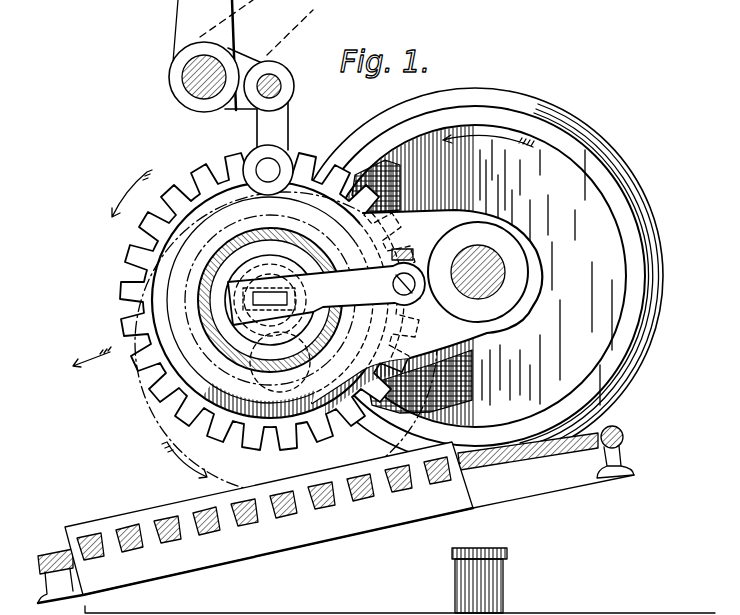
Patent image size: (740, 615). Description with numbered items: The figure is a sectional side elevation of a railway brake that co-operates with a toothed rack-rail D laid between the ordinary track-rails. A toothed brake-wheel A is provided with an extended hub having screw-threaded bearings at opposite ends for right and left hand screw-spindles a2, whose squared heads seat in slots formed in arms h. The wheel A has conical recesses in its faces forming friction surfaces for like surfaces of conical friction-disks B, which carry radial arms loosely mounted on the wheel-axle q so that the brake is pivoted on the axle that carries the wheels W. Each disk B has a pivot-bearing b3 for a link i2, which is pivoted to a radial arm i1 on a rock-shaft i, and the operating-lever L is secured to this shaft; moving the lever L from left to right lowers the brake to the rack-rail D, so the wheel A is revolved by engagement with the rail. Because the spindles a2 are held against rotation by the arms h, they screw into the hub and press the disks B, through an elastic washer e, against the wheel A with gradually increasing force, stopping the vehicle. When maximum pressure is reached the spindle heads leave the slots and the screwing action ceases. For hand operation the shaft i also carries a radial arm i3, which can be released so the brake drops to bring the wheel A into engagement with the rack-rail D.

The operating-lever L is at (204, 55).
The rock-shaft i is at (187, 87).
The radial arm i1 is at (290, 52).
The link i2 is at (292, 130).
The radial arm i3 is at (256, 27).
The pivot-bearing b3 is at (258, 160).
The toothed brake-wheel A is at (143, 333).
The conical friction-disk B is at (265, 300).
The screw-spindle a2 is at (263, 298).
The slotted arm h is at (326, 287).
The elastic washer e is at (423, 216).
The wheel-axle q is at (490, 252).
The wheel W is at (475, 276).
The rack-rail D is at (167, 512).